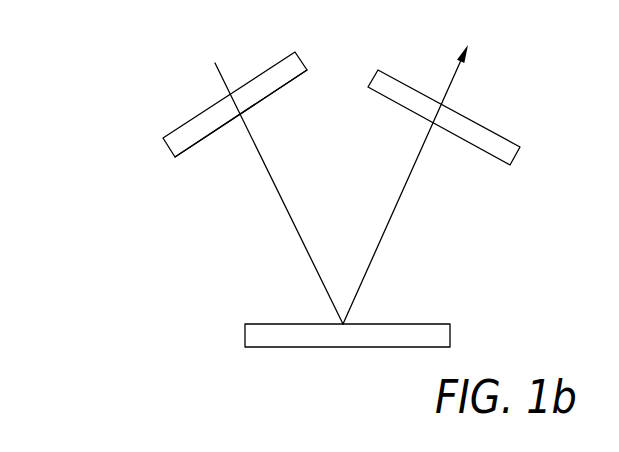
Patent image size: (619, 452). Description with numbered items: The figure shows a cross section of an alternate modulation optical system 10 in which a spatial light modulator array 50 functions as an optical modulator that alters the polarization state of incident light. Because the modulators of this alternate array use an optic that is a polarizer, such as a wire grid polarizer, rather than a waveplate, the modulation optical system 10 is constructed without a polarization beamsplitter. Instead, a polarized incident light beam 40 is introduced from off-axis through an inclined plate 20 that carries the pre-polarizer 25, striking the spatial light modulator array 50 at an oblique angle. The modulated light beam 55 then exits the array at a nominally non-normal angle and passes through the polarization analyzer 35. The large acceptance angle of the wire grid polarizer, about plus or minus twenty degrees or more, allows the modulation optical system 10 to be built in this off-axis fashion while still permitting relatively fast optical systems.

The modulation optical system 10 is at (176, 259).
The first polarizing plate 20 is at (217, 74).
The pre-polarizer 25 is at (218, 128).
The polarization analyzer 35 is at (493, 132).
The polarized incident light beam 40 is at (285, 207).
The spatial light modulator array 50 is at (450, 332).
The modulated light beam 55 is at (405, 192).